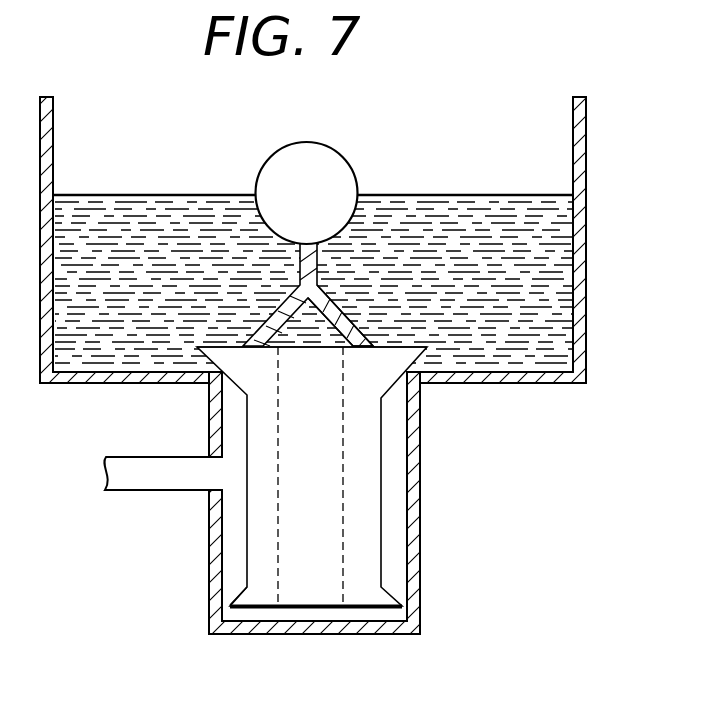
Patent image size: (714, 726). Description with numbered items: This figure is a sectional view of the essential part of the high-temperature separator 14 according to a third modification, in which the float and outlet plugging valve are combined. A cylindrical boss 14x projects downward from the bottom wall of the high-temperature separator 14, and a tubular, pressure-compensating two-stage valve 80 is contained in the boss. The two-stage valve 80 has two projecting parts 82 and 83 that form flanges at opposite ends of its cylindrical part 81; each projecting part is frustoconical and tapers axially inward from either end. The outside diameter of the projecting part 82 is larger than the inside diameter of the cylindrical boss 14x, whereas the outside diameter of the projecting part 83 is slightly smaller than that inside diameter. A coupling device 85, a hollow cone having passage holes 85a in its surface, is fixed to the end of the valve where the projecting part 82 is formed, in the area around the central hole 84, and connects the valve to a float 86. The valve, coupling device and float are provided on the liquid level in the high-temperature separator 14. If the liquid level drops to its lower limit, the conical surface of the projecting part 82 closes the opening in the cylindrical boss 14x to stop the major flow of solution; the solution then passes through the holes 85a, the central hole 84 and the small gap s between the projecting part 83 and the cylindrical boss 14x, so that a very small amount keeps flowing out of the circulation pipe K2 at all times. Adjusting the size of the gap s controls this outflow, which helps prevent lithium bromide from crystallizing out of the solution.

The high-temperature separator 14 is at (586, 318).
The cylindrical boss 14x is at (420, 588).
The two-stage valve 80 is at (327, 417).
The cylindrical part 81 is at (381, 513).
The projecting part 82 is at (225, 346).
The projecting part 83 is at (262, 610).
The central hole 84 is at (340, 588).
The coupling device 85 is at (317, 290).
The passage holes 85a is at (336, 308).
The float 86 is at (333, 147).
The circulation pipe K2 is at (153, 492).
The gap s is at (228, 600).